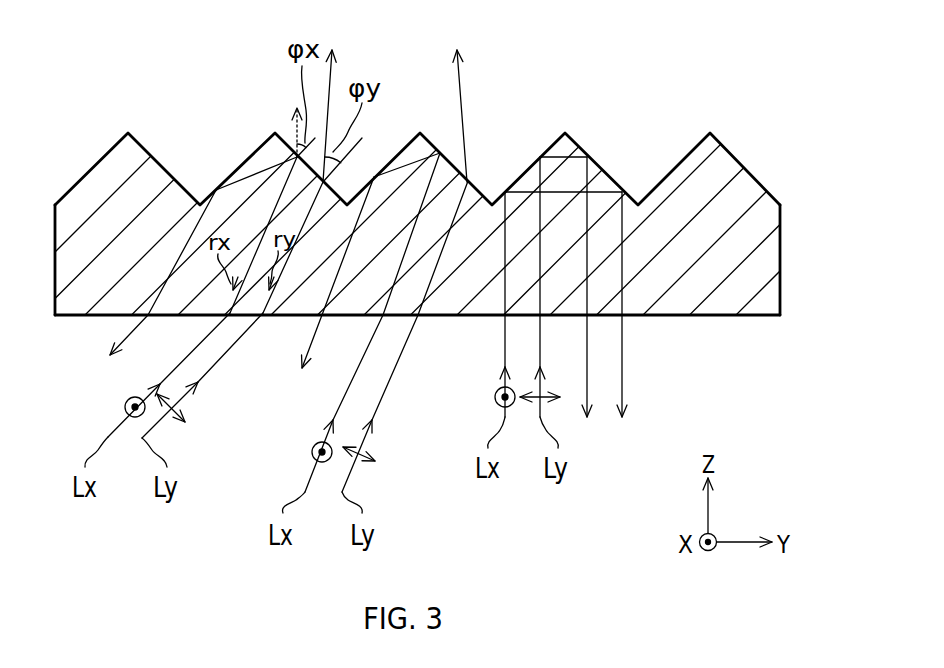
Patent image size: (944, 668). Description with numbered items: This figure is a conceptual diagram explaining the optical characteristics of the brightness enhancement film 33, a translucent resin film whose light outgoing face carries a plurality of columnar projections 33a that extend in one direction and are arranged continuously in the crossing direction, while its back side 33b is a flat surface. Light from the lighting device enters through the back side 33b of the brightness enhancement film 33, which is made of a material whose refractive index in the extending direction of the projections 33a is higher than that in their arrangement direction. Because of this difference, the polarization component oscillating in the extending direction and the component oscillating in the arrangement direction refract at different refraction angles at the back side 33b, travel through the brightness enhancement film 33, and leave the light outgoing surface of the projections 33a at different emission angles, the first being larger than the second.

The brightness enhancement film 33 is at (472, 202).
The columnar projections 33a is at (750, 186).
The back side 33b is at (711, 318).